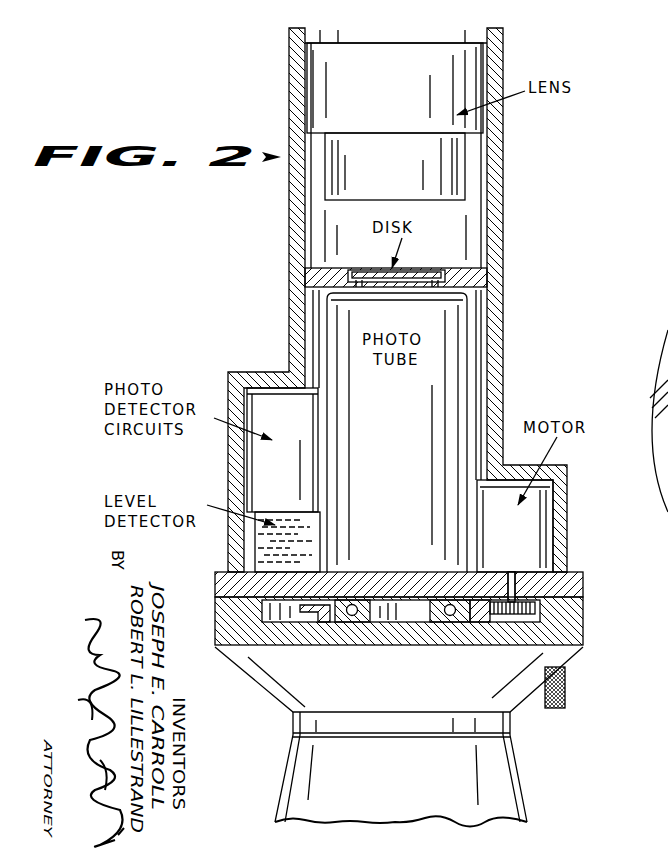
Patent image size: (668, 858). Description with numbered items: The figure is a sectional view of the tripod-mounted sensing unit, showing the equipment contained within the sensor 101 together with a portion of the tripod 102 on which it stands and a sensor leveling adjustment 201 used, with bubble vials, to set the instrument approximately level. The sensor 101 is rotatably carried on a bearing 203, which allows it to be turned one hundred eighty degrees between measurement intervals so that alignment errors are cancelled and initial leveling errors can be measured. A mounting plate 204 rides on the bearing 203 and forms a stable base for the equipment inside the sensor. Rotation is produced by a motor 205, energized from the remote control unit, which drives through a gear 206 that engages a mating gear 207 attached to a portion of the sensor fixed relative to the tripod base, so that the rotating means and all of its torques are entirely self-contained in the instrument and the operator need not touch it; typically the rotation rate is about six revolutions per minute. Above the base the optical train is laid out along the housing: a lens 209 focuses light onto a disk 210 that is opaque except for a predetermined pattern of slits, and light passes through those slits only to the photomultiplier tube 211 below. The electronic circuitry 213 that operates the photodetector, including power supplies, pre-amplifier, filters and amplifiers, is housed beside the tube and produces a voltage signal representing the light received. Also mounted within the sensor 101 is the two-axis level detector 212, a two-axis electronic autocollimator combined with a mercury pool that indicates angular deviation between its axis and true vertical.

The sensor 101 is at (290, 240).
The tripod 102 is at (490, 793).
The sensor leveling adjustment 201 is at (550, 718).
The bearing 203 is at (452, 622).
The mounting plate 204 is at (583, 587).
The motor 205 is at (525, 525).
The gear 206 is at (583, 633).
The mating gear 207 is at (328, 620).
The lens 209 is at (312, 79).
The disk 210 is at (430, 270).
The photomultiplier tube 211 is at (340, 313).
The two-axis level detector 212 is at (312, 541).
The electronic circuitry 213 is at (263, 457).